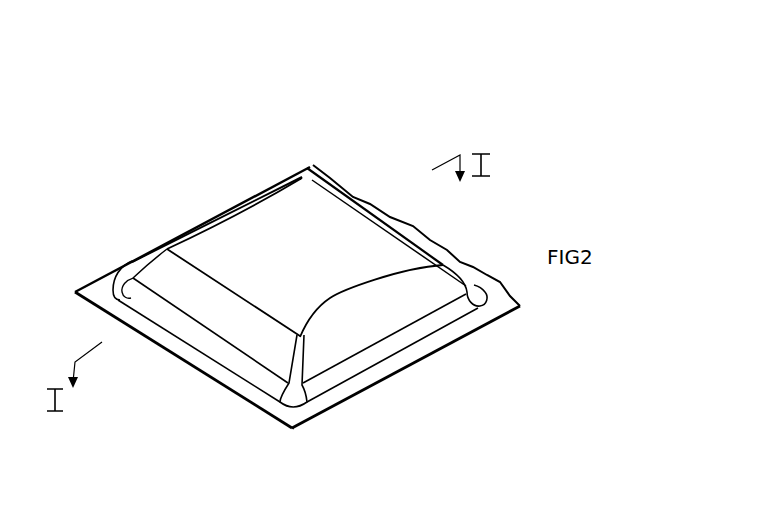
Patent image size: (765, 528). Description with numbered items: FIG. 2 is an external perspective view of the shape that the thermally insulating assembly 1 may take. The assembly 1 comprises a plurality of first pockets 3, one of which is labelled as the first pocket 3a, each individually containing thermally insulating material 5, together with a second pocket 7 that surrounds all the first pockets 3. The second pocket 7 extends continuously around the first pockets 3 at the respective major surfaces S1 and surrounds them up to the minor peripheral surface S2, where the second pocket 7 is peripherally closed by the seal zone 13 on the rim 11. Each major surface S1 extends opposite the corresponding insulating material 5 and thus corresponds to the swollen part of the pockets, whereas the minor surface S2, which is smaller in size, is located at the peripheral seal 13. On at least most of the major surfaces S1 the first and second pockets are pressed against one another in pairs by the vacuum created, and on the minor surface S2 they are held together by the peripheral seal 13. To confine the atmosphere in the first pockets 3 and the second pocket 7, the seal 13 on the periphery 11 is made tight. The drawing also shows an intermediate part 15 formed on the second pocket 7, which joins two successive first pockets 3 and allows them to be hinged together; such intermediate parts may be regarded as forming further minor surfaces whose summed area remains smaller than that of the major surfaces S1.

The assembly 1 is at (224, 175).
The first pockets 3 is at (403, 350).
The first pocket 3a is at (309, 356).
The thermally insulating material 5 is at (310, 267).
The second pocket 7 is at (509, 321).
The rim 11 is at (218, 218).
The peripheral seal 13 is at (117, 273).
The intermediate part 15 is at (390, 223).
The major surface S1 is at (293, 213).
The minor peripheral surface S2 is at (333, 403).